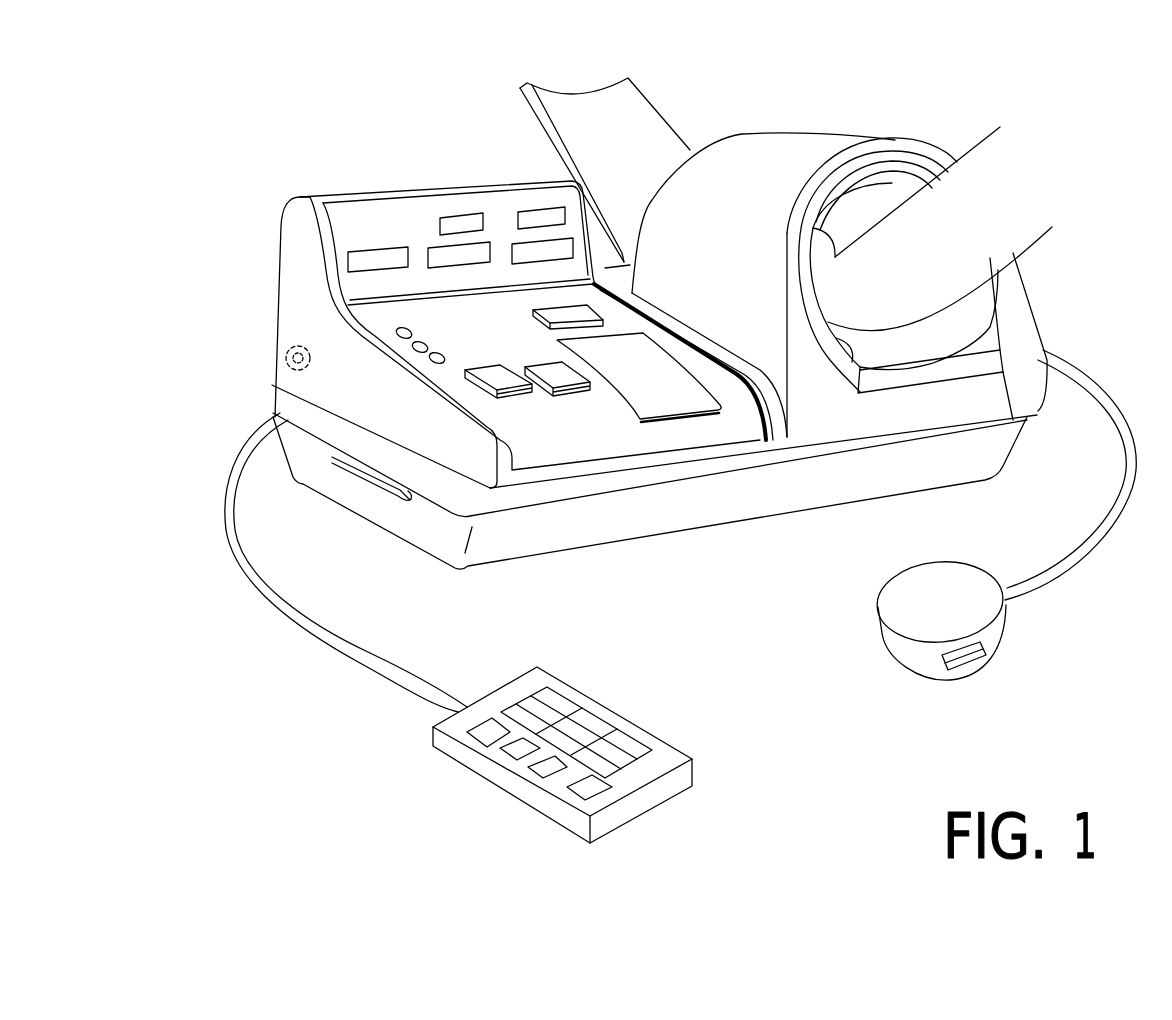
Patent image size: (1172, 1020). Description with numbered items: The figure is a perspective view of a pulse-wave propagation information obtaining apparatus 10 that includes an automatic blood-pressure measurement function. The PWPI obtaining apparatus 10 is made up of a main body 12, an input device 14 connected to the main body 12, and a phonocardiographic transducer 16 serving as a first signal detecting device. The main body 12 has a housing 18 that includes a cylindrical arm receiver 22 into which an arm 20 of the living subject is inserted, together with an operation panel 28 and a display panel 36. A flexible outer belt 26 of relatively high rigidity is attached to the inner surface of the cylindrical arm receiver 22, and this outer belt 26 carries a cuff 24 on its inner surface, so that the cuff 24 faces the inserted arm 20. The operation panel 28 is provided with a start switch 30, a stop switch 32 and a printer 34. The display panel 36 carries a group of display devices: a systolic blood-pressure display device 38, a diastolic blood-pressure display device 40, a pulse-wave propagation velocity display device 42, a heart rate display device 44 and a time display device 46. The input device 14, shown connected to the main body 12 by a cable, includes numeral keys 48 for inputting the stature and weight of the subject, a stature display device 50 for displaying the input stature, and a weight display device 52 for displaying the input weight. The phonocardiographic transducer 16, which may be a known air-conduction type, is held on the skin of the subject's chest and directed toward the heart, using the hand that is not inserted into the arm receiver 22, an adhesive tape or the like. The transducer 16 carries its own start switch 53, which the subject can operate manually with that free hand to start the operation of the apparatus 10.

The PWPI obtaining apparatus 10 is at (190, 142).
The main body 12 is at (826, 97).
The input device 14 is at (670, 818).
The phonocardiographic transducer 16 is at (910, 660).
The housing 18 is at (1030, 385).
The arm 20 is at (1013, 223).
The cylindrical arm receiver 22 is at (858, 393).
The cuff 24 is at (890, 180).
The outer belt 26 is at (1013, 420).
The operation panel 28 is at (370, 318).
The start switch 30 is at (487, 373).
The stop switch 32 is at (560, 375).
The printer 34 is at (680, 397).
The display panel 36 is at (369, 226).
The systolic blood-pressure display device 38 is at (442, 257).
The diastolic blood-pressure display device 40 is at (530, 252).
The pulse-wave propagation velocity display device 42 is at (357, 263).
The heart rate display device 44 is at (533, 215).
The time display device 46 is at (453, 222).
The numeral keys 48 is at (597, 727).
The stature display device 50 is at (485, 737).
The weight display device 52 is at (517, 753).
The start switch 53 is at (972, 662).